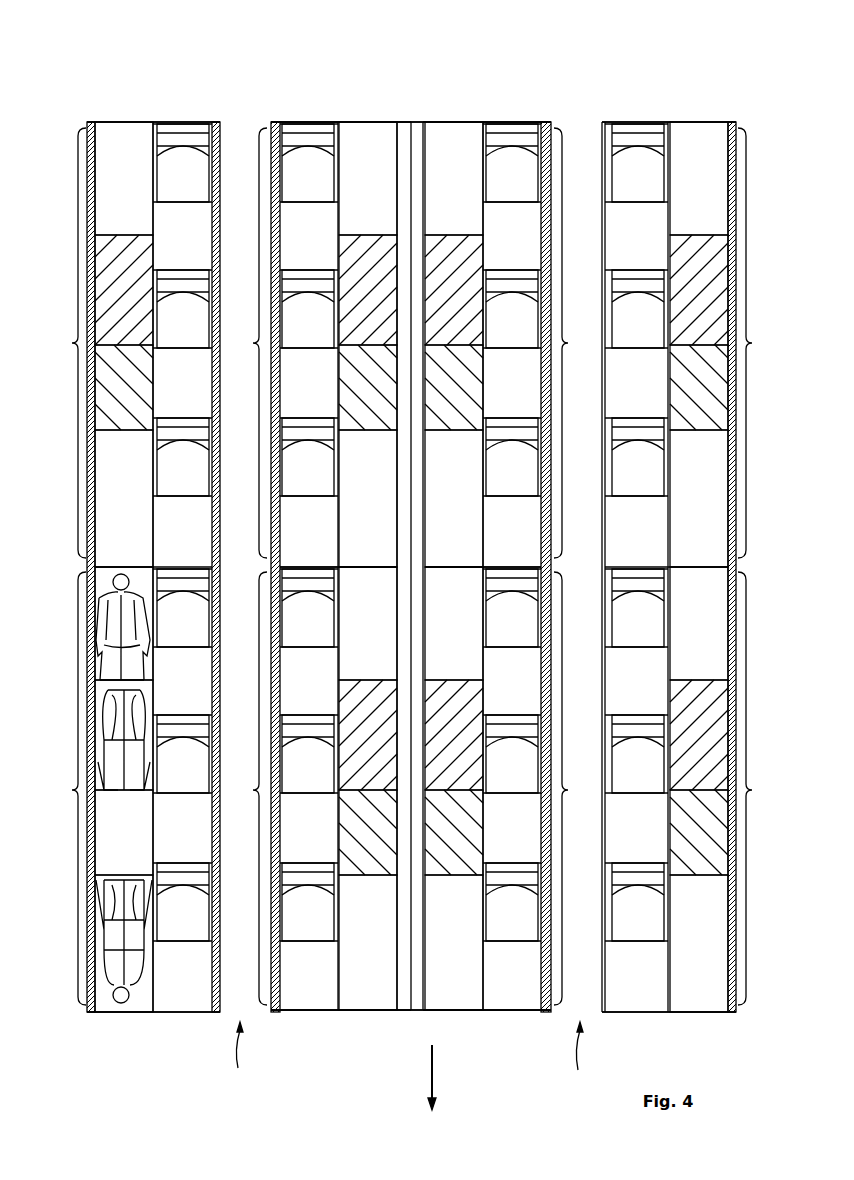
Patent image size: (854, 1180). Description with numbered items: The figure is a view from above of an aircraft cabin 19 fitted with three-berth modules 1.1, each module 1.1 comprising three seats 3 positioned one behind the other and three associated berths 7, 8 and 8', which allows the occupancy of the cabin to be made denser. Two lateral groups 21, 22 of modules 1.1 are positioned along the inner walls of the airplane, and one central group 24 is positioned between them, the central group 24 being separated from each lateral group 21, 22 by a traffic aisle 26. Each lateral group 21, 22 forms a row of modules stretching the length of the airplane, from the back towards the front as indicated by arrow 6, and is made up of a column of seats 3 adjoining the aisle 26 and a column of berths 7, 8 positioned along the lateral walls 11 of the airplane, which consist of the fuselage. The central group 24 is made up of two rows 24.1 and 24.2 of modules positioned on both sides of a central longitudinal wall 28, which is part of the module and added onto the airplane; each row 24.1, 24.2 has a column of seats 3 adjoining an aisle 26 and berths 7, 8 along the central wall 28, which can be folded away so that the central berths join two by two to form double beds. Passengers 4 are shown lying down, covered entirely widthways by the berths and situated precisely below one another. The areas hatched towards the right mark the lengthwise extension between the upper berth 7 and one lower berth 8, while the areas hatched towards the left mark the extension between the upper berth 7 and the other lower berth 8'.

The three-berth module 1.1 is at (409, 566).
The seat 3 is at (178, 168).
The passenger 4 is at (114, 582).
The arrow 6 is at (437, 1058).
The upper berth 7 is at (112, 856).
The lower berth 8 is at (411, 746).
The other lower berth 8' is at (388, 401).
The lateral wall 11 is at (92, 1014).
The aircraft cabin 19 is at (411, 510).
The lateral group 21 is at (217, 105).
The lateral group 22 is at (600, 106).
The central group 24 is at (545, 66).
The row of modules 24.1 is at (397, 105).
The row of modules 24.2 is at (552, 105).
The traffic aisle 26 is at (409, 1057).
The central longitudinal wall 28 is at (405, 1012).